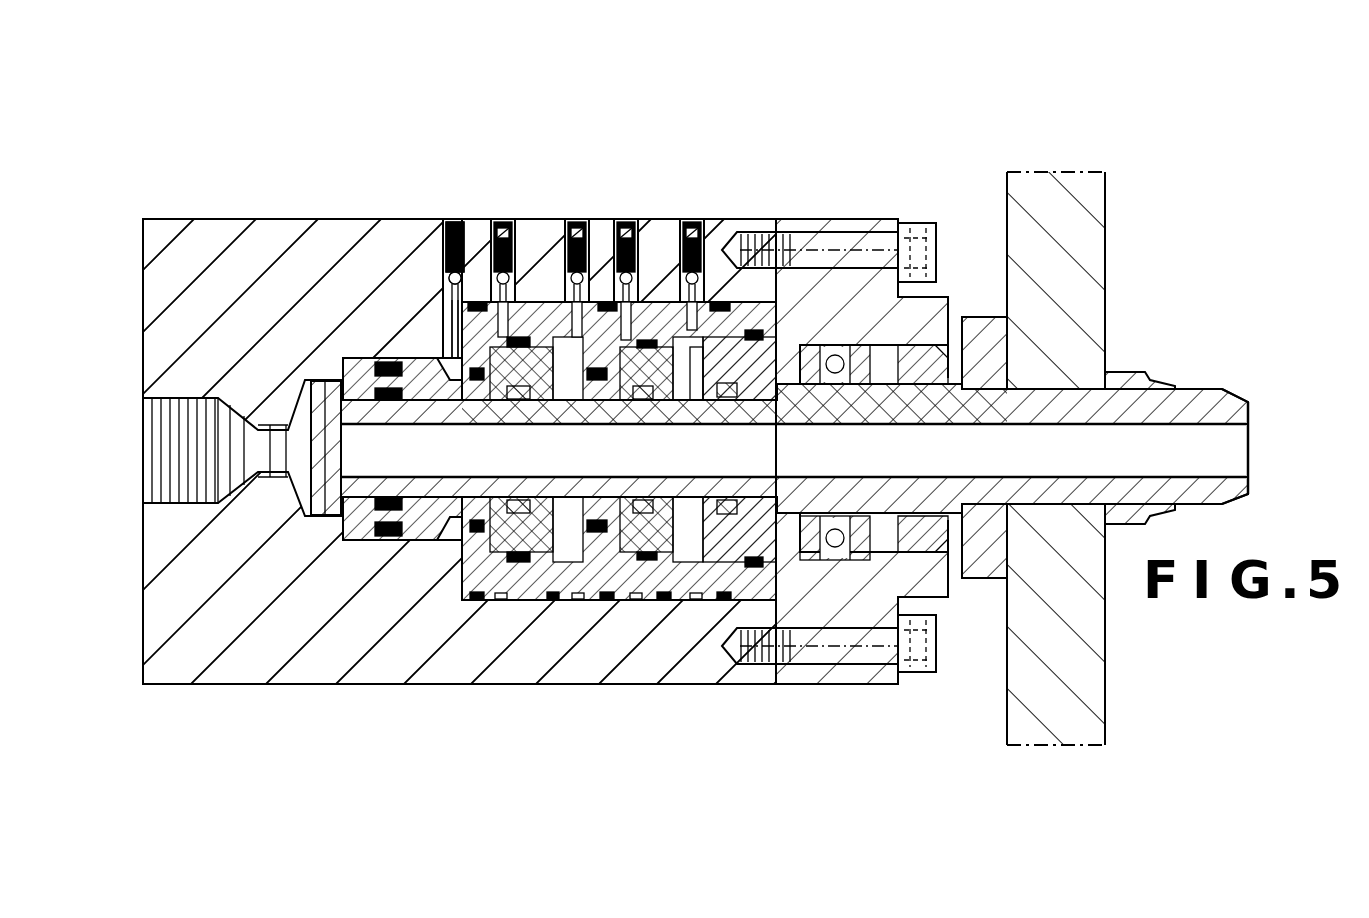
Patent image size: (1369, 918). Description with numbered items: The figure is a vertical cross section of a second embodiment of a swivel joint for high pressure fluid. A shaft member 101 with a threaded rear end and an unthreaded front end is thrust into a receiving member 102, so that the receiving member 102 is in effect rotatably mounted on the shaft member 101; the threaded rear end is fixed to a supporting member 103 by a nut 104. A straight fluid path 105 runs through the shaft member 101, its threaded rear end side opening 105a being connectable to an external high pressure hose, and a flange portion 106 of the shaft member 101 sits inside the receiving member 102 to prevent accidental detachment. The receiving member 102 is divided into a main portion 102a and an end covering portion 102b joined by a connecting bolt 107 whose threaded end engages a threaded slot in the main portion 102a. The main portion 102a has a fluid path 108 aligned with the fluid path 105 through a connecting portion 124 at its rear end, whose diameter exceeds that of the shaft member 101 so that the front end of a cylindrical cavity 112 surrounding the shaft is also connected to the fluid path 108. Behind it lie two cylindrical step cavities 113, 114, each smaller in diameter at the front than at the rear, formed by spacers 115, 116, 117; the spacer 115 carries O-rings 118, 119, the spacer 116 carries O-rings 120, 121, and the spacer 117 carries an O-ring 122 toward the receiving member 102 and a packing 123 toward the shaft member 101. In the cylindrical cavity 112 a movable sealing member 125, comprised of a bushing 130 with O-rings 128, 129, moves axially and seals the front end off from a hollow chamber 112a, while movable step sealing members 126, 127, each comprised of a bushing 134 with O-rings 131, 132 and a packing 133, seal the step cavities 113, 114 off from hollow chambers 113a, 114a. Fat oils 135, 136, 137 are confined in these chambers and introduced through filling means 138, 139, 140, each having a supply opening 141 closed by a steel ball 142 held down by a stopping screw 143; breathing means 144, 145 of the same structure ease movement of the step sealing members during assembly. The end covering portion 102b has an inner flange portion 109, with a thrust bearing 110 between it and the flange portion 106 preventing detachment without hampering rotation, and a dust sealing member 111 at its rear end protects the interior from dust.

The shaft member 101 is at (1045, 376).
The receiving member 102 is at (188, 212).
The main portion 102a is at (270, 218).
The end covering portion 102b is at (868, 218).
The supporting member 103 is at (1107, 185).
The nut 104 is at (1128, 372).
The fluid path 105 is at (1215, 415).
The threaded rear end side opening 105a is at (1237, 444).
The flange portion 106 is at (897, 220).
The connecting bolt 107 is at (965, 300).
The fluid path 108 is at (190, 487).
The inner flange portion 109 is at (1110, 403).
The thrust bearing 110 is at (1045, 403).
The dust sealing member 111 is at (1150, 412).
The cylindrical cavity 112 is at (480, 392).
The hollow chamber 112a is at (478, 515).
The cylindrical step cavity 113 is at (540, 400).
The hollow chamber 113a is at (562, 600).
The cylindrical step cavity 114 is at (735, 397).
The hollow chamber 114a is at (700, 600).
The spacer 115 is at (500, 605).
The spacer 116 is at (648, 600).
The spacer 117 is at (806, 605).
The O-ring 118 is at (455, 600).
The O-ring 119 is at (540, 600).
The O-ring 120 is at (650, 600).
The O-ring 121 is at (692, 600).
The O-ring 122 is at (758, 600).
The packing 123 is at (985, 391).
The connecting portion 124 is at (318, 380).
The movable sealing member 125 is at (356, 356).
The movable step sealing member 126 is at (640, 397).
The movable step sealing member 127 is at (838, 387).
The O-ring 128 is at (400, 403).
The O-ring 129 is at (388, 360).
The bushing 130 is at (333, 403).
The O-ring 131 is at (520, 402).
The O-ring 132 is at (590, 215).
The packing 133 is at (598, 400).
The bushing 134 is at (700, 397).
The fat oil 135 is at (425, 545).
The fat oil 136 is at (605, 600).
The fat oil 137 is at (845, 650).
The filling means 138 is at (462, 215).
The filling means 139 is at (637, 215).
The filling means 140 is at (867, 218).
The supply opening 141 is at (438, 296).
The steel ball 142 is at (446, 272).
The stopping screw 143 is at (433, 235).
The breathing means 144 is at (510, 215).
The breathing means 145 is at (672, 217).